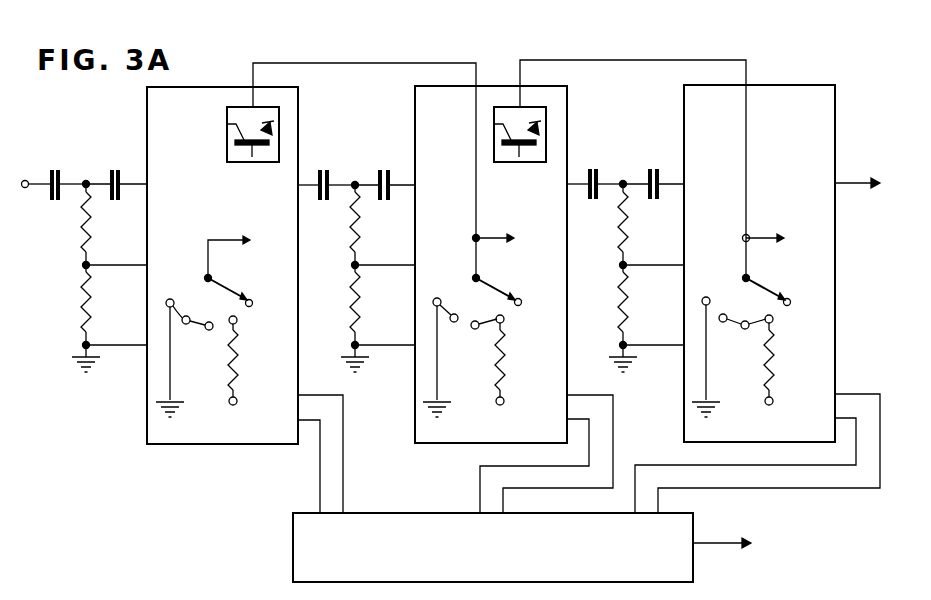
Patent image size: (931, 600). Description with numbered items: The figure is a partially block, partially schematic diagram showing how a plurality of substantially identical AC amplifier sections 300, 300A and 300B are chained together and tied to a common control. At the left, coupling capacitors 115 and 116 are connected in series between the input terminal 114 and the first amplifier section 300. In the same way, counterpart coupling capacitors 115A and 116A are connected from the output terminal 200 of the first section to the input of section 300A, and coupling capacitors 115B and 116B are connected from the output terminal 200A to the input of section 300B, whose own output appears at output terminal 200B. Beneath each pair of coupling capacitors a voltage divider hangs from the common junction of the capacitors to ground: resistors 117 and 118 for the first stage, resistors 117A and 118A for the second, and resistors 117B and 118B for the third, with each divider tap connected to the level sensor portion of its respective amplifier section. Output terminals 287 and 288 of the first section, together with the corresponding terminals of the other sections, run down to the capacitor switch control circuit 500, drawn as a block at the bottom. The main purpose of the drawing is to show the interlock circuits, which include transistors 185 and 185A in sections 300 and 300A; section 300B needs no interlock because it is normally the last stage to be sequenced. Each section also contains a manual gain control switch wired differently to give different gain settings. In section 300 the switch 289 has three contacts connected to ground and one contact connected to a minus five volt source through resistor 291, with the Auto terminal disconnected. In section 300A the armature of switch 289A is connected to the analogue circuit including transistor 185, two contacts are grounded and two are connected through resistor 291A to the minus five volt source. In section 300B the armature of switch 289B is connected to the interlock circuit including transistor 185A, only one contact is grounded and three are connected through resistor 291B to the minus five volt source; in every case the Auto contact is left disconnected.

The input terminal 114 is at (25, 180).
The coupling capacitor 115 is at (52, 170).
The coupling capacitor 116 is at (112, 170).
The resistor 117 is at (80, 236).
The resistor 118 is at (80, 312).
The transistor 185 is at (240, 163).
The output terminal 200 is at (301, 184).
The manual gain control switch 289 is at (224, 290).
The resistor 291 is at (238, 373).
The amplifier section 300 is at (199, 90).
The amplifier section 300A is at (494, 90).
The amplifier section 300B is at (789, 90).
The coupling capacitor 115A is at (322, 170).
The coupling capacitor 116A is at (386, 203).
The resistor 117A is at (350, 236).
The resistor 118A is at (350, 312).
The transistor 185A is at (506, 163).
The output terminal 200A is at (571, 183).
The manual gain control switch 289A is at (490, 290).
The resistor 291A is at (502, 375).
The coupling capacitor 115B is at (592, 168).
The coupling capacitor 116B is at (654, 203).
The resistor 117B is at (618, 236).
The resistor 118B is at (618, 312).
The output terminal 200B is at (843, 182).
The manual gain control switch 289B is at (760, 290).
The resistor 291B is at (771, 375).
The output terminal 287 is at (305, 394).
The output terminal 288 is at (305, 424).
The capacitor switch control circuit 500 is at (296, 536).